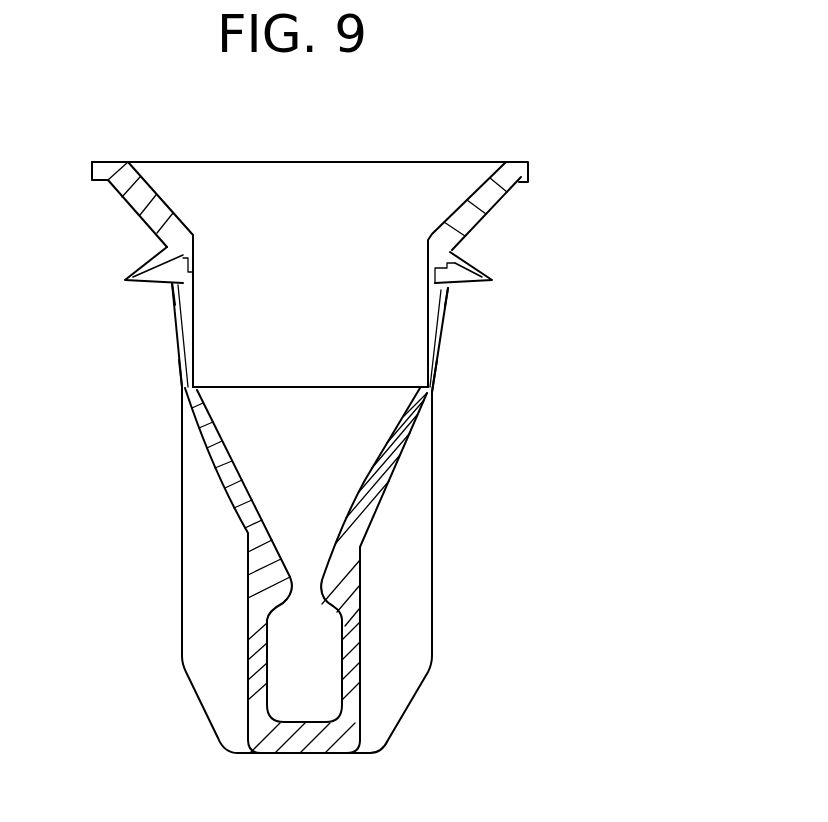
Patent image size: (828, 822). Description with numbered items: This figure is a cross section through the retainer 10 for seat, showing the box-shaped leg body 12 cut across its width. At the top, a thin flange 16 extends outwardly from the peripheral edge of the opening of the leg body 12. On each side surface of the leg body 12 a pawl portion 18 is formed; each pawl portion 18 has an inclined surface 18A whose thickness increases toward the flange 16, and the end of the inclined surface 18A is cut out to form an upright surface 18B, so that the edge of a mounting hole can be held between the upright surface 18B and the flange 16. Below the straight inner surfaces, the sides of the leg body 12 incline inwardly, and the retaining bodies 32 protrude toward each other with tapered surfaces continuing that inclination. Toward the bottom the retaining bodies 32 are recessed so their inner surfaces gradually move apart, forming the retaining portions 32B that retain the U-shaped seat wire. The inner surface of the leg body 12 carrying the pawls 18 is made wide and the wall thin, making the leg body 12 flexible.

The retainer for seat 10 is at (600, 181).
The leg body 12 is at (433, 534).
The flange 16 is at (151, 258).
The pawl portion 18 is at (175, 306).
The inclined surface 18A is at (176, 338).
The upright surface 18B is at (173, 285).
The retaining body 32 is at (227, 453).
The retaining portion 32B is at (268, 641).